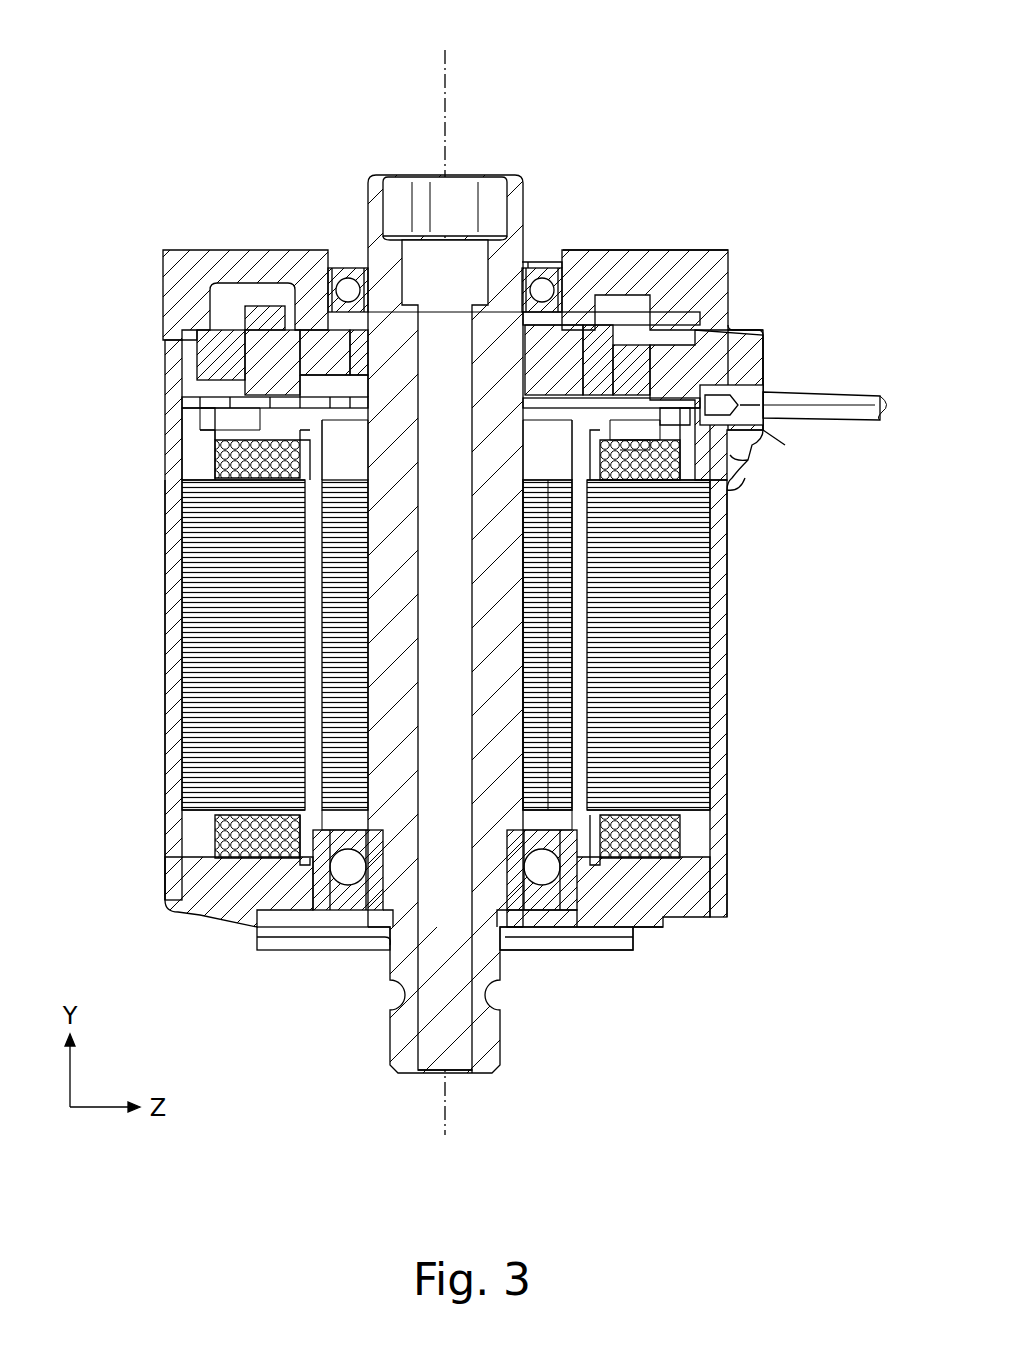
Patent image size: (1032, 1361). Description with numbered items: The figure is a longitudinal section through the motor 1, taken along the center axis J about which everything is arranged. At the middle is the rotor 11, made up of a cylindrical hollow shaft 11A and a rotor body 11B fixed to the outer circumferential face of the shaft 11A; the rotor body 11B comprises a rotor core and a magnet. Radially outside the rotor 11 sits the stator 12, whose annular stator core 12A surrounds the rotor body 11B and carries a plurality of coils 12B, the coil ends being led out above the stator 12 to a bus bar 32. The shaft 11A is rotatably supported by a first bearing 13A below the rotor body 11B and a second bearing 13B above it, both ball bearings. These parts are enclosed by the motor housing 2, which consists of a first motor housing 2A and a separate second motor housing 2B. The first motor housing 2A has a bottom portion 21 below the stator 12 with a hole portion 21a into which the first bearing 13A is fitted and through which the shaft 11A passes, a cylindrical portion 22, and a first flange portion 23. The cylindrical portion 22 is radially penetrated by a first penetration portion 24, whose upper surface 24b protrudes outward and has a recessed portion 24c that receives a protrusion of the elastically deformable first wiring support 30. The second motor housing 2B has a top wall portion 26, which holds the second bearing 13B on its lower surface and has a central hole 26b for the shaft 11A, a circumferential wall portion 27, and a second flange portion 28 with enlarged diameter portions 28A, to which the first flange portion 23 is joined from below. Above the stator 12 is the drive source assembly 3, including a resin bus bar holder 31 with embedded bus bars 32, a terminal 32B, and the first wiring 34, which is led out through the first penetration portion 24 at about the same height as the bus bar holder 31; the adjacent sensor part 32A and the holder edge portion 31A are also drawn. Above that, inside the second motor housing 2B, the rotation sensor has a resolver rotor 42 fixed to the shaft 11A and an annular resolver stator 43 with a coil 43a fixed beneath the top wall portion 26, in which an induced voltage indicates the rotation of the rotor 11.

The motor 1 is at (755, 120).
The motor housing 2 is at (62, 290).
The first motor housing 2A is at (163, 425).
The second motor housing 2B is at (160, 290).
The drive source assembly 3 is at (772, 440).
The rotor 11 is at (590, 636).
The shaft 11A is at (535, 706).
The rotor body 11B is at (565, 745).
The stator 12 is at (385, 647).
The stator core 12A is at (235, 715).
The coil 12B is at (222, 458).
The first bearing 13A is at (543, 872).
The second bearing 13B is at (548, 288).
The bottom portion 21 is at (315, 952).
The hole portion 21a is at (372, 928).
The cylindrical portion 22 is at (175, 645).
The first flange portion 23 is at (745, 478).
The first penetration portion 24 is at (745, 392).
The upper surface 24b is at (755, 464).
The recessed portion 24c is at (742, 488).
The top wall portion 26 is at (225, 268).
The central hole 26b is at (535, 262).
The circumferential wall portion 27 is at (722, 280).
The second flange portion 28 is at (762, 372).
The enlarged diameter portion 28A is at (746, 330).
The first wiring support 30 is at (768, 428).
The bus bar holder 31 is at (705, 406).
The board edge portion 31A is at (698, 398).
The bus bar 32 is at (650, 390).
The sensor 32A is at (635, 398).
The terminal 32B is at (580, 398).
The first wiring 34 is at (884, 398).
The resolver rotor 42 is at (316, 345).
The resolver stator 43 is at (250, 362).
The coil 43a is at (262, 355).
The center axis J is at (437, 103).